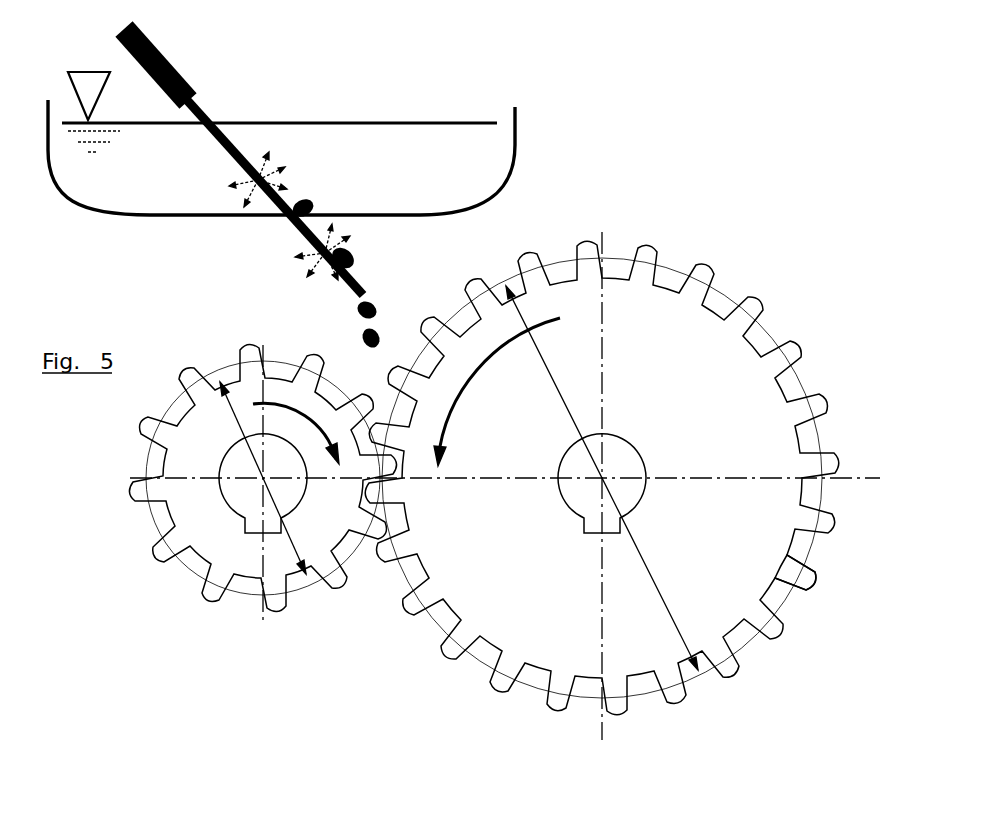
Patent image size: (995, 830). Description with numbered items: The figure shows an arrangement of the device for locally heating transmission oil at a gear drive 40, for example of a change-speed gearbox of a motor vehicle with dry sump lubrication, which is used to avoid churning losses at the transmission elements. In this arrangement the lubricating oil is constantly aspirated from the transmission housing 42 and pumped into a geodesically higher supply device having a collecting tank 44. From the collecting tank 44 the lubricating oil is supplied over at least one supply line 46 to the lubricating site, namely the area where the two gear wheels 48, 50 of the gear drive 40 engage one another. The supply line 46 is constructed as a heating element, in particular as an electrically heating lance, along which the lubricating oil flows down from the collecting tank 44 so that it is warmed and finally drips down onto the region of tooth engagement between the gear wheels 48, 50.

The gear drive 40 is at (348, 605).
The transmission housing 42 is at (789, 242).
The collecting tank 44 is at (517, 147).
The supply line 46 is at (231, 140).
The gear wheel 48 is at (153, 557).
The gear wheel 50 is at (810, 587).